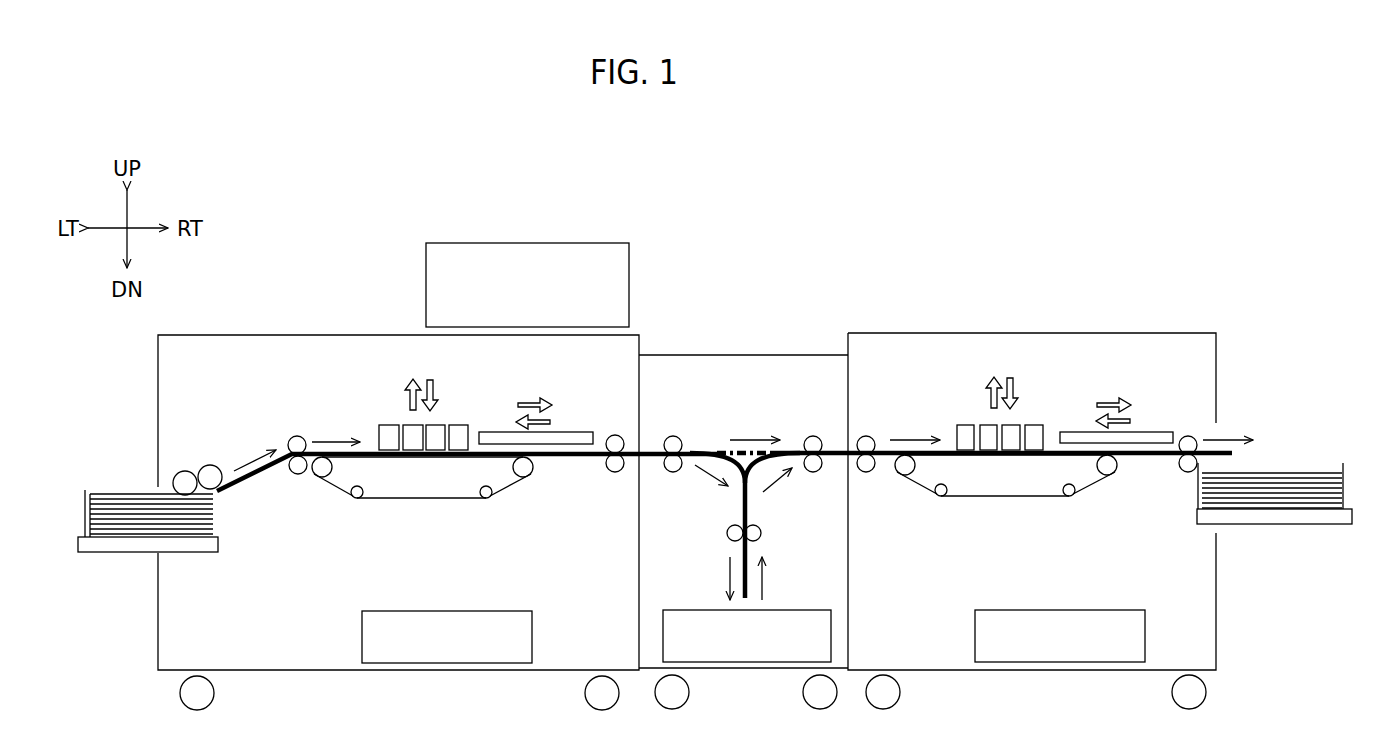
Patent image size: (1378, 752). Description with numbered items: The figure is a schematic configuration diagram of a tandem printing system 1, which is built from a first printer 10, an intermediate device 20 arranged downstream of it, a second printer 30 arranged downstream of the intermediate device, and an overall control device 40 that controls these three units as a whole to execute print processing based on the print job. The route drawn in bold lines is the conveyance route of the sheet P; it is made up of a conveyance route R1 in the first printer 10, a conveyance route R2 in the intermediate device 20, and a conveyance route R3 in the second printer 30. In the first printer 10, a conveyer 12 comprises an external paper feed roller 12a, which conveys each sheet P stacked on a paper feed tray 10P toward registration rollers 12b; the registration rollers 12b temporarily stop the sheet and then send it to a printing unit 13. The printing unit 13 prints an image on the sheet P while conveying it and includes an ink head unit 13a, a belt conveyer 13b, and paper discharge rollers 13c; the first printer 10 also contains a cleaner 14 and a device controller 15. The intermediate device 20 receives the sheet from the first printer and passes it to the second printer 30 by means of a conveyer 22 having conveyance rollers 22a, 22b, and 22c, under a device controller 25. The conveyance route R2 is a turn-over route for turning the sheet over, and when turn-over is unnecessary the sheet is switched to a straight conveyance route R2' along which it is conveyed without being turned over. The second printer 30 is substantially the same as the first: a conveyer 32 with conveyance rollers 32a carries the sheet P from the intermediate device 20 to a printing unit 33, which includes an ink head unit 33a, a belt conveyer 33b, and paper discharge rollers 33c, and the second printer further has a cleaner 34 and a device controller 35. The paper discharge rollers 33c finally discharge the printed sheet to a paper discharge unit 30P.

The tandem printing system 1 is at (990, 183).
The first printer 10 is at (298, 333).
The paper feed tray 10P is at (110, 485).
The sheet P is at (140, 493).
The conveyer 12 is at (280, 436).
The external paper feed roller 12a is at (208, 470).
The registration rollers 12b is at (298, 476).
The printing unit 13 is at (372, 423).
The ink head unit 13a is at (463, 425).
The belt conveyer 13b is at (407, 490).
The paper discharge rollers 13c is at (615, 472).
The cleaner 14 is at (572, 428).
The device controller 15 is at (450, 611).
The conveyance route R1 is at (253, 487).
The intermediate device 20 is at (748, 355).
The conveyer 22 is at (763, 436).
The conveyance rollers 22a is at (673, 472).
The conveyance rollers 22b is at (732, 542).
The conveyance rollers 22c is at (813, 436).
The device controller 25 is at (814, 610).
The conveyance route R2 is at (740, 525).
The straight conveyance route R2' is at (735, 420).
The second printer 30 is at (985, 333).
The paper discharge unit 30P is at (1308, 462).
The conveyer 32 is at (902, 433).
The conveyance rollers 32a is at (866, 472).
The printing unit 33 is at (973, 412).
The ink head unit 33a is at (1043, 425).
The belt conveyer 33b is at (1000, 490).
The paper discharge rollers 33c is at (1188, 472).
The cleaner 34 is at (1157, 430).
The device controller 35 is at (1066, 610).
The conveyance route R3 is at (887, 457).
The overall control device 40 is at (531, 243).